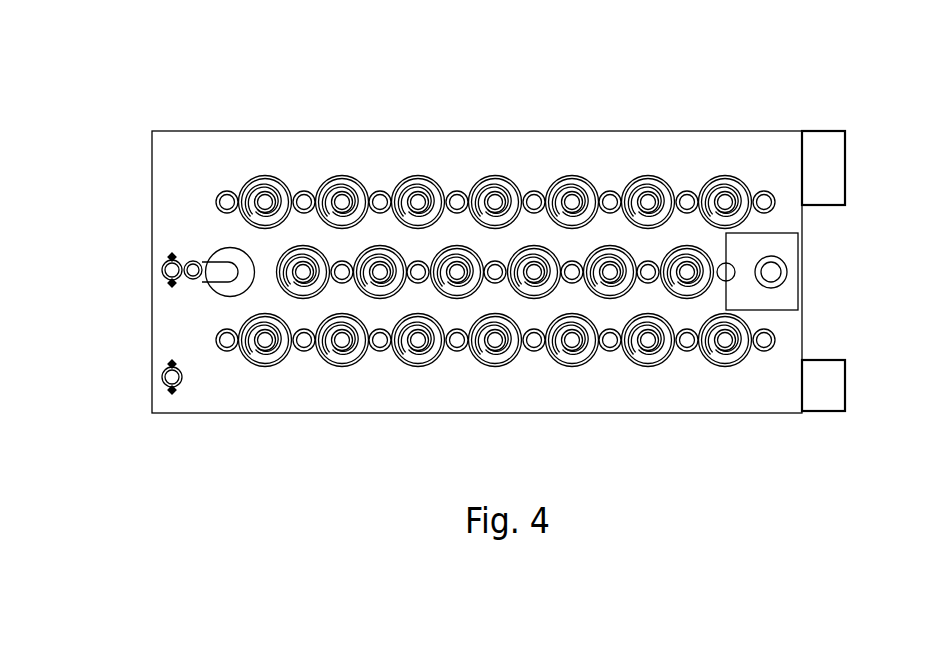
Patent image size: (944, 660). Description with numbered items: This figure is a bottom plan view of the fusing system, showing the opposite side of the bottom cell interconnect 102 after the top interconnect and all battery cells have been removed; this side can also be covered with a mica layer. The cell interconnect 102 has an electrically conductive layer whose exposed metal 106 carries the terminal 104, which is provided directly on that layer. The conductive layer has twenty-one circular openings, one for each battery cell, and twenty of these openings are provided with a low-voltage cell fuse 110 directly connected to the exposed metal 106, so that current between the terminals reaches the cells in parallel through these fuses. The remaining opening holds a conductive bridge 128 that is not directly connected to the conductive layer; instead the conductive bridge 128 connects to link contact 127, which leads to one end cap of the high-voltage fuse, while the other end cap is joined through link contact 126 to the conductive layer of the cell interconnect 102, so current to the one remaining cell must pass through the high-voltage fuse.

The bottom cell interconnect 102 is at (382, 388).
The terminal 104 is at (770, 268).
The exposed metal 106 is at (745, 255).
The low-voltage cell fuse 110 is at (497, 199).
The link contact 126 is at (163, 380).
The link contact 127 is at (165, 268).
The conductive bridge 128 is at (213, 265).